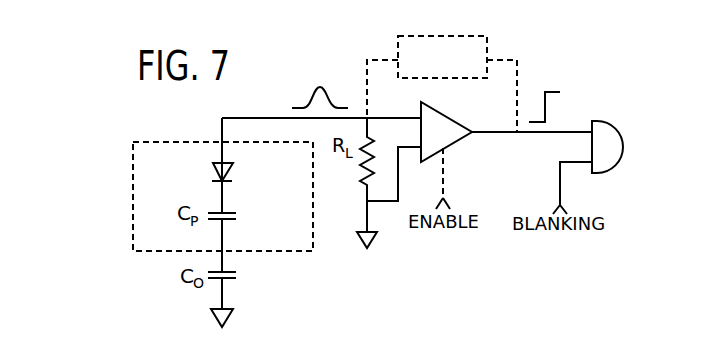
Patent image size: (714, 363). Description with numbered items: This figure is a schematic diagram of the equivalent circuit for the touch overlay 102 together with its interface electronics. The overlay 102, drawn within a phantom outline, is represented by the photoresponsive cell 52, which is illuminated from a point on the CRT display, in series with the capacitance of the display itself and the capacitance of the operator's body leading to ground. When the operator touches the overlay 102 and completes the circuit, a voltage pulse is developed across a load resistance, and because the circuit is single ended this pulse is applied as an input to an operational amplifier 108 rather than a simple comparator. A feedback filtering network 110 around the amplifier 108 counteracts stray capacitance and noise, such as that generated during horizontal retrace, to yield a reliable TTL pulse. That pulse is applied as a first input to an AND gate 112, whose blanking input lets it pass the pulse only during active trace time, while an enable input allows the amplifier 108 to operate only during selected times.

The overlay 102 is at (125, 209).
The photoresponsive cell 52 is at (240, 173).
The operational amplifier 108 is at (447, 133).
The feedback filtering network 110 is at (463, 38).
The AND gate 112 is at (606, 129).